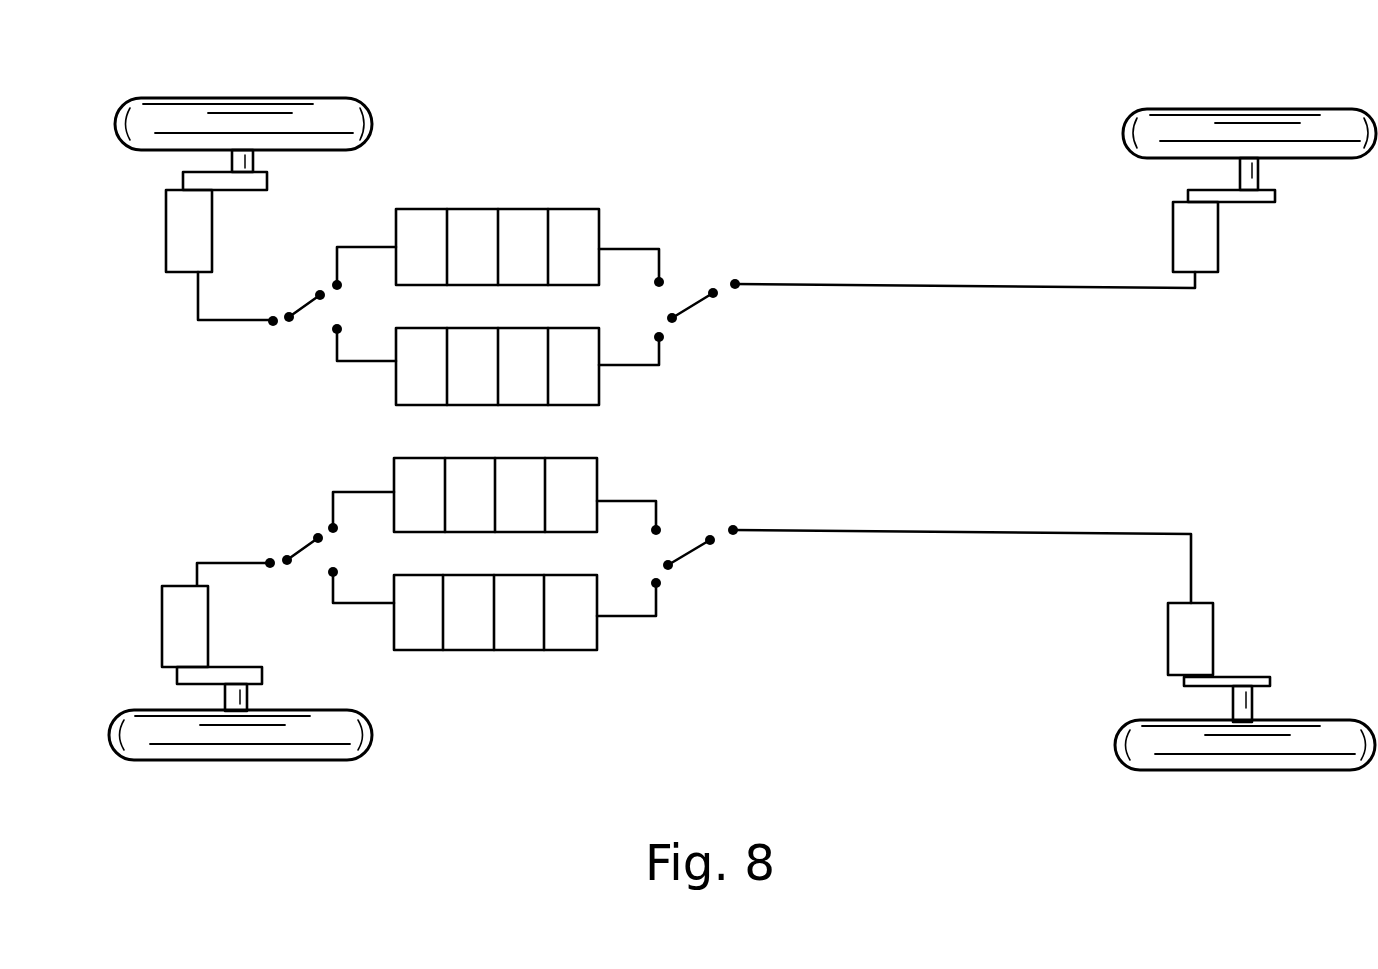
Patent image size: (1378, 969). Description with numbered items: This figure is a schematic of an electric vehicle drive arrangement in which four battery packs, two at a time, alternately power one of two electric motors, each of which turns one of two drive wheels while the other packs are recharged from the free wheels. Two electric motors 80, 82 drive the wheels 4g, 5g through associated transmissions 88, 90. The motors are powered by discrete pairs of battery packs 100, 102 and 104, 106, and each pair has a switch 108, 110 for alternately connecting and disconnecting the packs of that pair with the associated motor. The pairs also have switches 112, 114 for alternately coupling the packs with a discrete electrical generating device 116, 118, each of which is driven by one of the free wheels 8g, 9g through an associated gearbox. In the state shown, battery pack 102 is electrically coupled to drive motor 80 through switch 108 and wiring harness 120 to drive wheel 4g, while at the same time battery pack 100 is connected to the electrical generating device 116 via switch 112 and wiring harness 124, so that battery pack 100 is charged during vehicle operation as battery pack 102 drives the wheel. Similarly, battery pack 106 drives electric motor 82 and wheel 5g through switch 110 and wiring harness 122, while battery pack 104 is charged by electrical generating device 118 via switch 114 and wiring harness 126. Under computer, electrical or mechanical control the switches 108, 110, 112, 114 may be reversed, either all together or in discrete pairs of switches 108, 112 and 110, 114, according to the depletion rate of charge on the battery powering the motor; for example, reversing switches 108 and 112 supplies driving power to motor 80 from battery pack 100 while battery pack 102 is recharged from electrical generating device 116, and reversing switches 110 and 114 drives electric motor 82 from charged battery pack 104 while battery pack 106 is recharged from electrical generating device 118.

The drive wheel 4g is at (1272, 127).
The drive wheel 5g is at (1271, 750).
The free wheel 8g is at (265, 117).
The free wheel 9g is at (265, 738).
The electric motor 80 is at (1178, 259).
The electric motor 82 is at (1175, 617).
The transmission 88 is at (1252, 200).
The transmission 90 is at (1246, 680).
The battery pack 100 is at (575, 230).
The battery pack 102 is at (573, 380).
The battery pack 104 is at (590, 480).
The battery pack 106 is at (565, 640).
The switch 108 is at (697, 316).
The switch 110 is at (660, 548).
The switch 112 is at (317, 318).
The switch 114 is at (323, 557).
The electrical generating device 116 is at (172, 230).
The electrical generating device 118 is at (180, 580).
The wiring harness 120 is at (965, 283).
The wiring harness 122 is at (1037, 535).
The wiring harness 124 is at (193, 300).
The wiring harness 126 is at (198, 562).